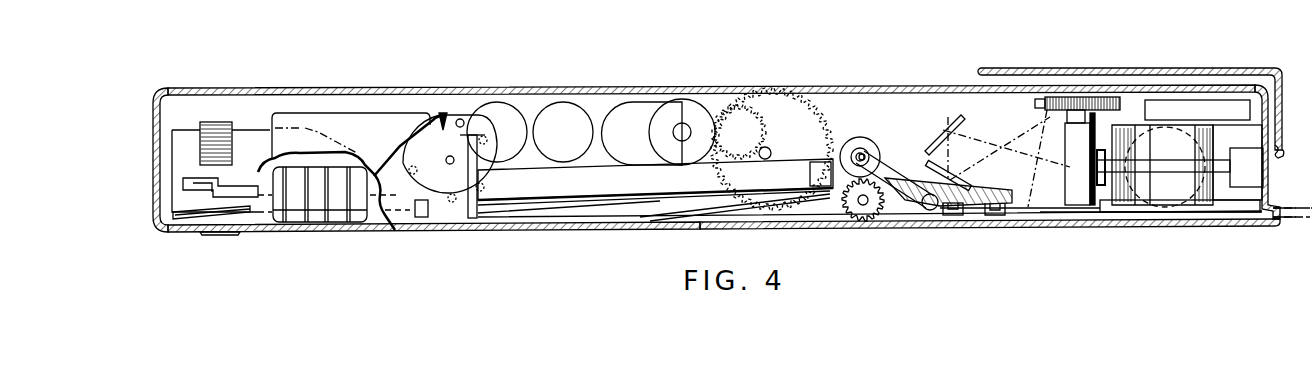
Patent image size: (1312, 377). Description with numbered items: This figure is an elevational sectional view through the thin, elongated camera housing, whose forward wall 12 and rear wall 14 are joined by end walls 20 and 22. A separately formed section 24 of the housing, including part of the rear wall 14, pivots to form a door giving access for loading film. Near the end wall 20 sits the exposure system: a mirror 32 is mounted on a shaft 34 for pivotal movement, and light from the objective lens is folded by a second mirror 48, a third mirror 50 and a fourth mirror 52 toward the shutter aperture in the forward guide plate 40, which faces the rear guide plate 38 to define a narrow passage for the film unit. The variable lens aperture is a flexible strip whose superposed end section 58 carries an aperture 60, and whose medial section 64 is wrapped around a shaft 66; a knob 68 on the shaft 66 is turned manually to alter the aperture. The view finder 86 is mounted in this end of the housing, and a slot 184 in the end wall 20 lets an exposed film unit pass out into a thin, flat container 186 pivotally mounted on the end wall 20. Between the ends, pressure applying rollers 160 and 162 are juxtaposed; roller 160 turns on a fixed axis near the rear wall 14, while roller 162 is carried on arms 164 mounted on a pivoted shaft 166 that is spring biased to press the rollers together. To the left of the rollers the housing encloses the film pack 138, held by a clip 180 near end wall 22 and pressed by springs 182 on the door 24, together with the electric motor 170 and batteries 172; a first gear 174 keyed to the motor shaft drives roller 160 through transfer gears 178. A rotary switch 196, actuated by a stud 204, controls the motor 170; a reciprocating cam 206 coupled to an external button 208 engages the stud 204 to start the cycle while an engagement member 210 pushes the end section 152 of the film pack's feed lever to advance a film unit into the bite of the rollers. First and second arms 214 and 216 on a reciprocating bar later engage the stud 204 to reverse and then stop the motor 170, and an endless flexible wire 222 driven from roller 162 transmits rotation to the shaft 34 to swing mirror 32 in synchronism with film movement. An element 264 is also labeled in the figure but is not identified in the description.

The forward wall 12 is at (375, 88).
The rear wall 14 is at (912, 228).
The end wall 20 is at (1270, 175).
The end wall 22 is at (153, 150).
The door section 24 is at (490, 230).
The mirror 32 is at (1148, 205).
The shaft 34 is at (1200, 188).
The rear guide plate 38 is at (1052, 215).
The forward guide plate 40 is at (990, 196).
The second mirror 48 is at (942, 150).
The third mirror 50 is at (933, 165).
The fourth mirror 52 is at (1053, 97).
The end section 58 is at (990, 214).
The aperture 60 is at (1188, 120).
The medial section 64 is at (1066, 155).
The shaft 66 is at (1092, 97).
The knob 68 is at (1040, 100).
The view finder 86 is at (1270, 82).
The film pack 138 is at (613, 197).
The end section 152 is at (178, 217).
The pressure applying roller 160 is at (863, 207).
The pressure applying roller 162 is at (858, 140).
The arms 164 is at (884, 152).
The shaft 166 is at (950, 213).
The electric motor 170 is at (627, 103).
The batteries 172 is at (508, 106).
The first gear 174 is at (680, 112).
The transfer gears 178 is at (797, 137).
The clip 180 is at (218, 122).
The springs 182 is at (240, 218).
The slot 184 is at (1295, 215).
The container 186 is at (1135, 70).
The rotary switch 196 is at (443, 112).
The stud 204 is at (430, 127).
The reciprocating cam 206 is at (334, 113).
The button 208 is at (340, 220).
The engagement member 210 is at (190, 180).
The first arm 214 is at (432, 226).
The second arm 216 is at (482, 175).
The endless flexible wire 222 is at (862, 157).
The hole 264 is at (461, 118).